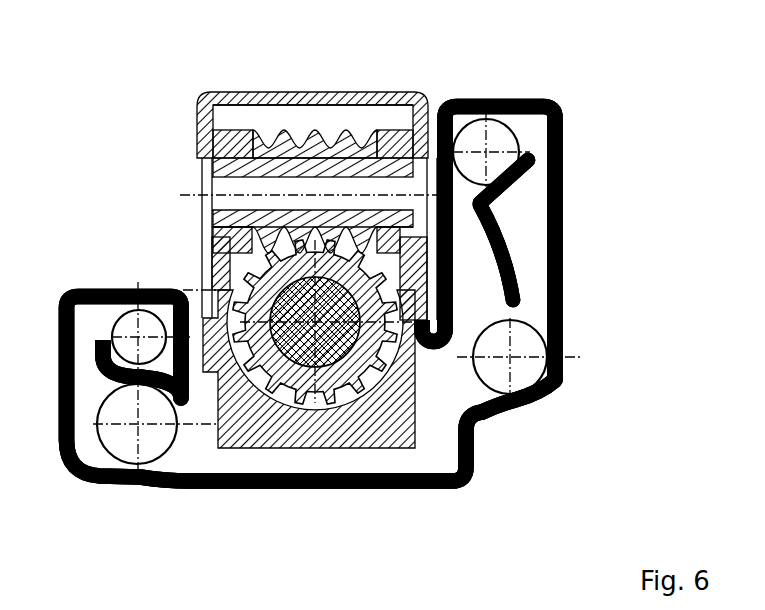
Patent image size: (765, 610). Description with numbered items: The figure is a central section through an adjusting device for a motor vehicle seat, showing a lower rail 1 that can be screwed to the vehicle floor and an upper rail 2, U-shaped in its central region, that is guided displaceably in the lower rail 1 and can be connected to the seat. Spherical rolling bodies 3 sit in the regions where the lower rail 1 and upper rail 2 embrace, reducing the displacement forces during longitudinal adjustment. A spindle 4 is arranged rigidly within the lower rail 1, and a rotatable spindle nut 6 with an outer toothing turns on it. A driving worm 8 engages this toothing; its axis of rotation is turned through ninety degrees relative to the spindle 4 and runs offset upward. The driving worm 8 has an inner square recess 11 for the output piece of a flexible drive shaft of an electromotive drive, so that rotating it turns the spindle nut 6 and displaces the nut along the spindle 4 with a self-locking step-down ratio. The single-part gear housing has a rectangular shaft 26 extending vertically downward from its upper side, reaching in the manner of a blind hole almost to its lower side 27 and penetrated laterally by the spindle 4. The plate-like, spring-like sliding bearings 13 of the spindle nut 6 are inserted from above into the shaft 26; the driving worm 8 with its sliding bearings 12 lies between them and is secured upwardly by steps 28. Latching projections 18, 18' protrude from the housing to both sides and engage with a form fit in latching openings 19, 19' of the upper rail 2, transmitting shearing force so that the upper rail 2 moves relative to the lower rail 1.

The lower rail 1 is at (410, 488).
The upper rail 2 is at (247, 92).
The spherical rolling bodies 3 is at (130, 315).
The spindle 4 is at (327, 333).
The spindle nut 6 is at (276, 356).
The driving worm 8 is at (340, 123).
The square recess 11 is at (225, 204).
The sliding bearings 12 is at (237, 143).
The sliding bearings 13 is at (350, 120).
The latching projection 18 is at (171, 262).
The latching projection 18' is at (525, 278).
The latching opening 19 is at (163, 226).
The latching opening 19' is at (527, 239).
The shaft 26 is at (287, 123).
The lower side 27 is at (291, 450).
The steps 28 is at (398, 118).